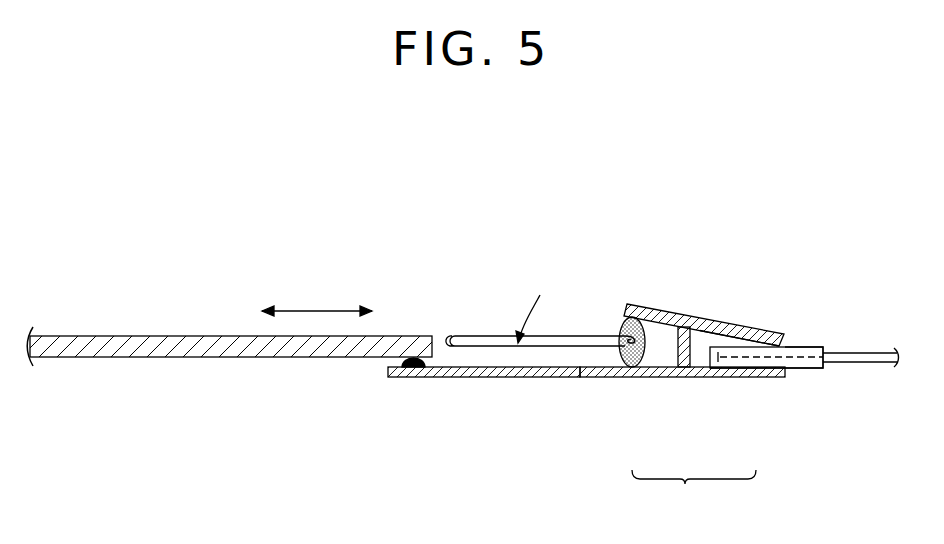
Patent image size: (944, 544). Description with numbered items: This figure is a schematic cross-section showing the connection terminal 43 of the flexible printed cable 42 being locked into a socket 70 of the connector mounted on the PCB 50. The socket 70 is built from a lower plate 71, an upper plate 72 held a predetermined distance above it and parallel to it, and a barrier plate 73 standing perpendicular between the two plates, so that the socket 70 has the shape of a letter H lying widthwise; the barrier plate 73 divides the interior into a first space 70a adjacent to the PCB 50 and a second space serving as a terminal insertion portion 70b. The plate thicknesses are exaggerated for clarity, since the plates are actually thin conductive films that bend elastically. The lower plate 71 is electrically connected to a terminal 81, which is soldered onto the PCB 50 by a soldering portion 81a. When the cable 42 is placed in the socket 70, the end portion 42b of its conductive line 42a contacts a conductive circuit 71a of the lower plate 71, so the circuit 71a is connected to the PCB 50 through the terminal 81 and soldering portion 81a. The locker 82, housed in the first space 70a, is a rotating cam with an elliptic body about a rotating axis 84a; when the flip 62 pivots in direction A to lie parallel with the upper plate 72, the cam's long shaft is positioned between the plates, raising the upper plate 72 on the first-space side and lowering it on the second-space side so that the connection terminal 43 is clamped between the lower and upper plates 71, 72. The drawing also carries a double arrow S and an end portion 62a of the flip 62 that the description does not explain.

The PCB 50 is at (341, 357).
The moving direction S is at (316, 311).
The soldering portion 81a is at (416, 377).
The terminal 81 is at (520, 378).
The locker 82 is at (613, 378).
The flip 62 is at (597, 285).
The strip end 62a is at (452, 333).
The direction A is at (527, 311).
The lower plate 71 is at (637, 378).
The rotating axis 84a is at (620, 316).
The first space 70a is at (662, 333).
The terminal insertion portion 70b is at (715, 343).
The barrier plate 73 is at (688, 378).
The upper plate 72 is at (758, 378).
The conductive circuit 71a is at (714, 377).
The connection terminal 43 is at (822, 369).
The conductive line 42a is at (797, 356).
The end portion 42b is at (790, 369).
The flexible printed cable 42 is at (868, 363).
The socket 70 is at (694, 493).